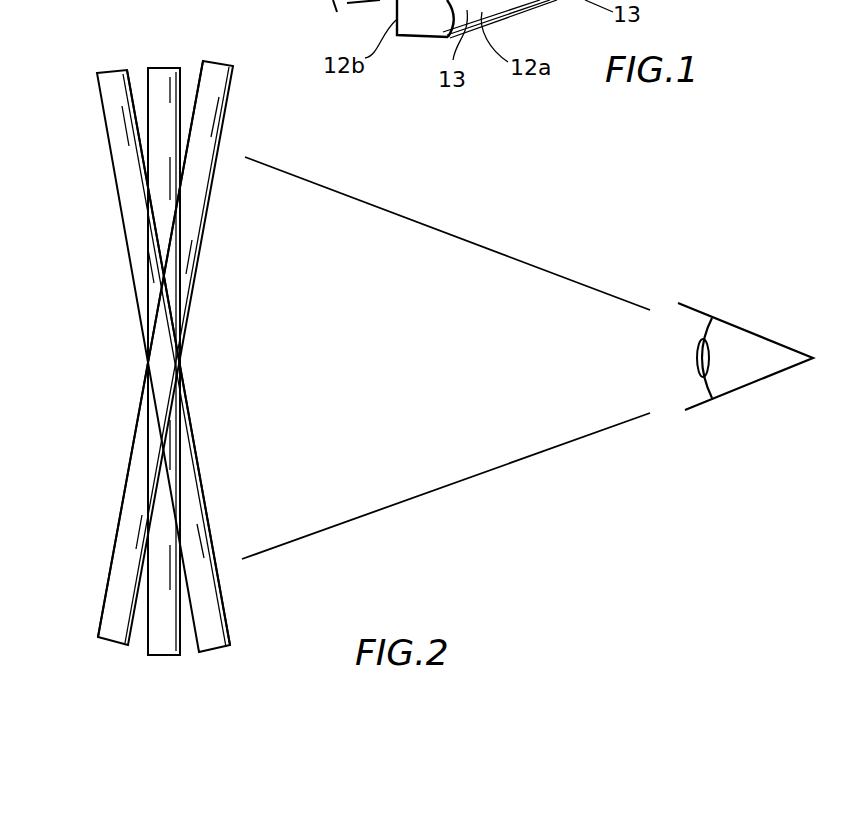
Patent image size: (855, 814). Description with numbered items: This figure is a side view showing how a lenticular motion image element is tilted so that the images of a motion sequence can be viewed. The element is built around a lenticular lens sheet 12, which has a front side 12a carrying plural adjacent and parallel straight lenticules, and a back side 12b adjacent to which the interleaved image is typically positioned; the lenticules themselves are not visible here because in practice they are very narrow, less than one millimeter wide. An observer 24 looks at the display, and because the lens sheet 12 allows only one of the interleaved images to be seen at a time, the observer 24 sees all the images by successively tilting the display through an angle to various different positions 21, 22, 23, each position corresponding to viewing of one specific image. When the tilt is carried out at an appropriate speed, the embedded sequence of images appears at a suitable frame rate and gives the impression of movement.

The lenticular lens sheet 12 is at (160, 359).
The front side 12a is at (208, 213).
The back side 12b is at (122, 513).
The first position 21 is at (110, 77).
The second position 22 is at (162, 72).
The third position 23 is at (217, 70).
The observer 24 is at (747, 370).